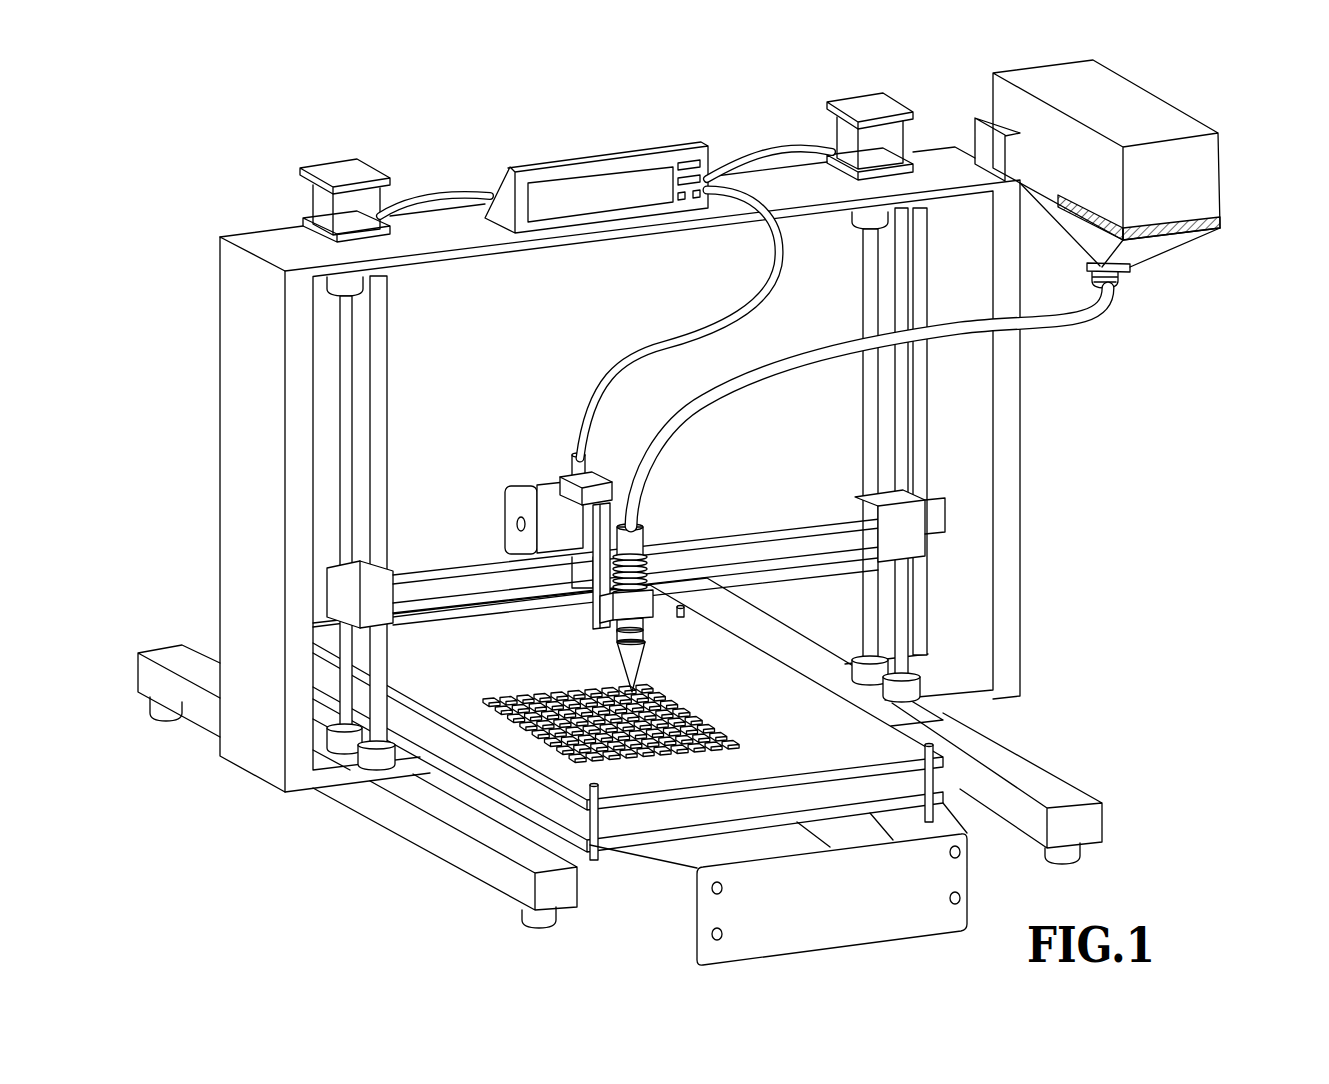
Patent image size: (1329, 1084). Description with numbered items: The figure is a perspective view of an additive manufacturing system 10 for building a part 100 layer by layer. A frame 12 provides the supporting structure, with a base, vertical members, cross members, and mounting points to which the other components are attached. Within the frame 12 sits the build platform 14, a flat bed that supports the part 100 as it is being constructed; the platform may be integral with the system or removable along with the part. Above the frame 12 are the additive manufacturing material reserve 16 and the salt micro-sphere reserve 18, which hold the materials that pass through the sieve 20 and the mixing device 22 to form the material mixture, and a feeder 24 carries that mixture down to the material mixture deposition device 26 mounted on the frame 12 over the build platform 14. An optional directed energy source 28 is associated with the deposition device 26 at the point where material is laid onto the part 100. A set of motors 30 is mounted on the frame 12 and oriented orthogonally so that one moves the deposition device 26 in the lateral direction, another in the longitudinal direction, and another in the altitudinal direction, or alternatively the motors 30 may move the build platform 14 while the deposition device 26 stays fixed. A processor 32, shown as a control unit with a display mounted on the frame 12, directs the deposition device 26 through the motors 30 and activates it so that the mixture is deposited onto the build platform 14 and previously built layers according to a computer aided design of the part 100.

The additive manufacturing system 10 is at (684, 511).
The frame 12 is at (172, 487).
The build platform 14 is at (480, 678).
The additive manufacturing material reserve 16 is at (987, 97).
The salt micro-sphere reserve 18 is at (1188, 101).
The sieve 20 is at (1222, 224).
The mixing device 22 is at (1077, 235).
The feeder 24 is at (1123, 290).
The material mixture deposition device 26 is at (608, 471).
The directed energy source 28 is at (607, 644).
The motors 30 is at (330, 170).
The processor 32 is at (560, 172).
The part 100 is at (688, 706).